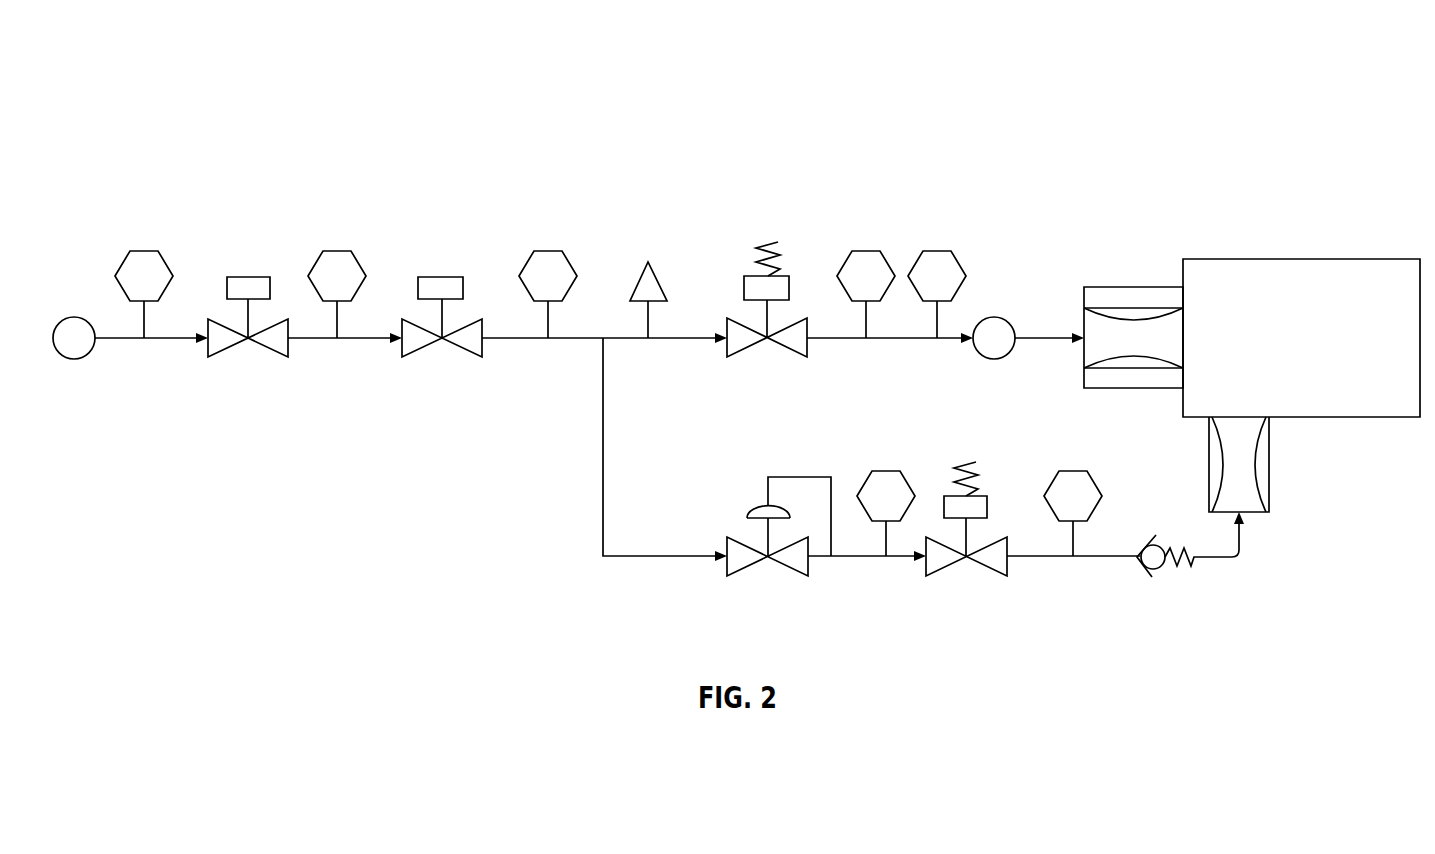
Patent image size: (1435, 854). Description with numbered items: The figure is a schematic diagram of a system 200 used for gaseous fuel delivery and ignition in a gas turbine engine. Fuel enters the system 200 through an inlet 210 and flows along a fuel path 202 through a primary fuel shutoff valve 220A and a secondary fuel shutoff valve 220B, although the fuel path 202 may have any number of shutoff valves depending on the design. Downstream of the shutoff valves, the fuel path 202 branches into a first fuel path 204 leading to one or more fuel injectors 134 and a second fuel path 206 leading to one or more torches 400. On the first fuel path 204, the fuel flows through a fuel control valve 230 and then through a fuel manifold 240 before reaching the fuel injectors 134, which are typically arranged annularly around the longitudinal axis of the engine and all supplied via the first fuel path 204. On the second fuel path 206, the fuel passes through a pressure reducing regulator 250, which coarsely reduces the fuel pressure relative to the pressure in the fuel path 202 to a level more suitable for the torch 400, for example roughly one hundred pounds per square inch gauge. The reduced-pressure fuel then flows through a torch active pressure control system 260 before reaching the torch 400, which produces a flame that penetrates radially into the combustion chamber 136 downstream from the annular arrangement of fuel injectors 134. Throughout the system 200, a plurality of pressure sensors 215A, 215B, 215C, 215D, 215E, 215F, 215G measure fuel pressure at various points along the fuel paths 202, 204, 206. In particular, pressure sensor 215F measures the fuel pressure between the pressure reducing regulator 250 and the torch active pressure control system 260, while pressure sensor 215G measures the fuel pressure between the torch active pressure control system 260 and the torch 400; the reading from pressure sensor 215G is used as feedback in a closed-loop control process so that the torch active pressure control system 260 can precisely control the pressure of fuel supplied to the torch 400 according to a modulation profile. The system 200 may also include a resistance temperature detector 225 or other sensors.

The system 200 is at (131, 122).
The inlet 210 is at (74, 359).
The pressure sensor 215A is at (144, 251).
The pressure sensor 215B is at (337, 251).
The pressure sensor 215C is at (548, 251).
The pressure sensor 215D is at (866, 252).
The pressure sensor 215E is at (937, 251).
The pressure sensor 215F is at (886, 471).
The pressure sensor 215G is at (1073, 471).
The primary fuel shutoff valve 220A is at (248, 277).
The secondary fuel shutoff valve 220B is at (442, 277).
The fuel path 202 is at (518, 338).
The first fuel path 204 is at (670, 338).
The second fuel path 206 is at (643, 556).
The resistance temperature detector 225 is at (648, 262).
The fuel control valve 230 is at (768, 246).
The fuel manifold 240 is at (995, 317).
The fuel injector 134 is at (1133, 287).
The combustion chamber 136 is at (1300, 259).
The torch 400 is at (1269, 462).
The pressure reducing regulator 250 is at (748, 568).
The torch active pressure control (TAPC) system 260 is at (947, 568).